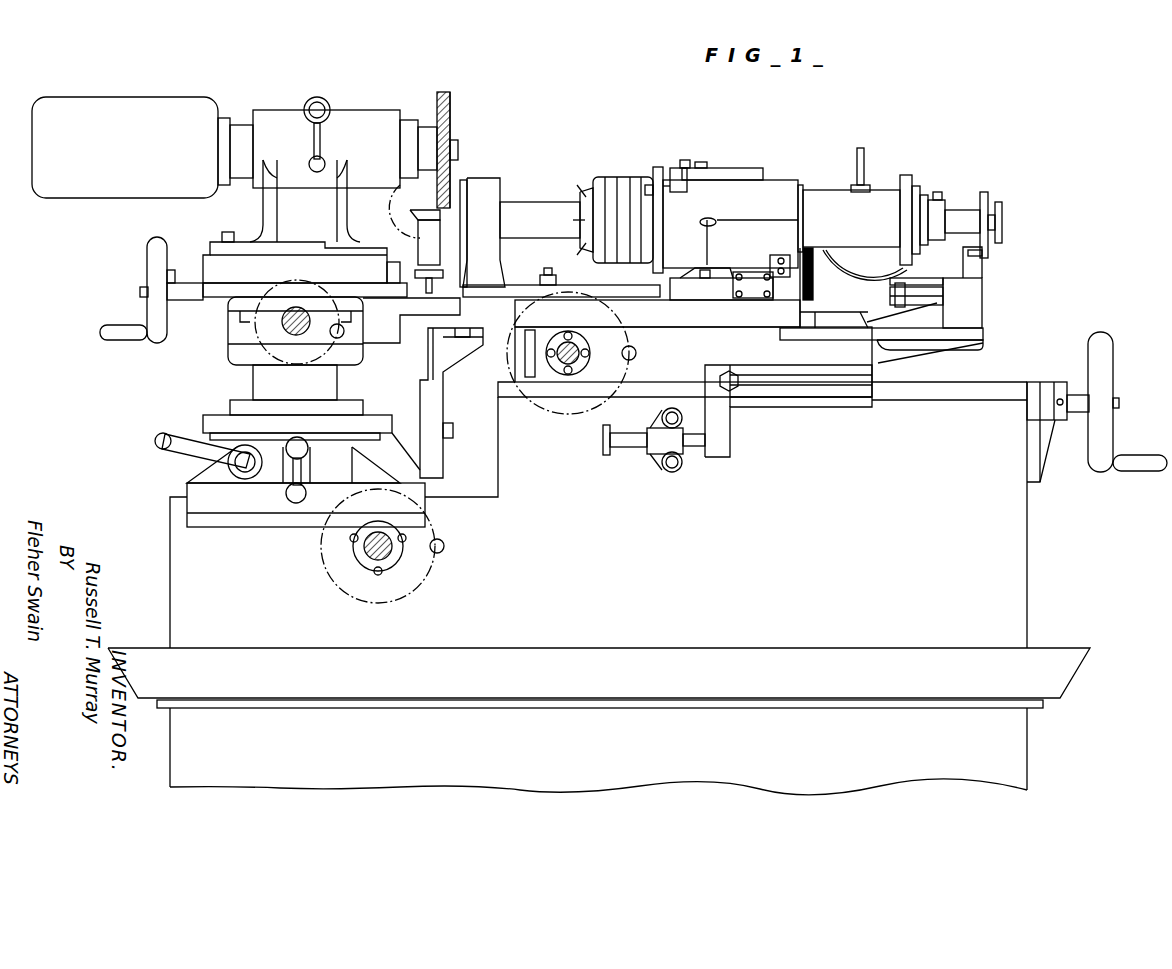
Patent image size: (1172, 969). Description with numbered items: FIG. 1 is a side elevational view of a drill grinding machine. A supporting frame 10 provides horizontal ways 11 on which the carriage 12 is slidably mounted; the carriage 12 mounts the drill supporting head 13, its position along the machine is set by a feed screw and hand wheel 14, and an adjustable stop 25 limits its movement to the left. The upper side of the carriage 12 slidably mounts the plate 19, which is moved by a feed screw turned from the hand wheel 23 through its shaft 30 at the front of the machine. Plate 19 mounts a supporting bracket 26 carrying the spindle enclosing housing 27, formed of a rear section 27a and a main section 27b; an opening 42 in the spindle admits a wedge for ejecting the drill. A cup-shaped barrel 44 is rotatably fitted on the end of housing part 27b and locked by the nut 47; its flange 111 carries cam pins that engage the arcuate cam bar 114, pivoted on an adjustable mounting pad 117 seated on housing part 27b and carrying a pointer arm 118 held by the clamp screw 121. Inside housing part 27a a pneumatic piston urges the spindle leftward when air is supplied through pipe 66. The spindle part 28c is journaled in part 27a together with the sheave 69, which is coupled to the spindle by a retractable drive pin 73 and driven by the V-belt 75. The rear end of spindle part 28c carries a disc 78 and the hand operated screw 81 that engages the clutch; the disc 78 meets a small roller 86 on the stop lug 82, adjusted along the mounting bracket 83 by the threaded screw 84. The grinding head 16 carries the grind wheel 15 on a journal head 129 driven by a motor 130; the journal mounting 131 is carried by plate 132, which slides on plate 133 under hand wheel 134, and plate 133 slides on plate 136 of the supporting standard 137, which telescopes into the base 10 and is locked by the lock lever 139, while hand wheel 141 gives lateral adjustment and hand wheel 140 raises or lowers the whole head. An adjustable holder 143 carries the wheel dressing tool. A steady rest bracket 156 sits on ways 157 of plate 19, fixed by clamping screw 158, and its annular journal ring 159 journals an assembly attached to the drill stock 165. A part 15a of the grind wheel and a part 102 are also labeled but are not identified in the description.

The supporting frame 10 is at (1030, 582).
The horizontal ways 11 is at (985, 395).
The carriage 12 is at (758, 358).
The drill supporting head 13 is at (800, 178).
The hand wheel 14 is at (1107, 333).
The grind wheel 15 is at (437, 96).
The grinding wheel face 15a is at (450, 96).
The grinding head 16 is at (266, 108).
The plate 19 is at (790, 310).
The hand wheel 23 is at (636, 358).
The adjustable stop 25 is at (700, 455).
The supporting bracket 26 is at (672, 290).
The spindle enclosing housing 27 is at (790, 180).
The rear section of housing 27a is at (872, 190).
The main section of housing 27b is at (772, 178).
The spindle part 28c is at (965, 210).
The shaft 30 is at (575, 360).
The opening 42 is at (716, 222).
The cup-shaped shell or barrel 44 is at (617, 177).
The locking nut 47 is at (585, 185).
The pipe 66 is at (856, 152).
The sheave 69 is at (920, 188).
The retractable drive pin 73 is at (938, 192).
The V-belt 75 is at (908, 175).
The disc 78 is at (990, 200).
The hand operated screw 81 is at (1003, 215).
The stop lug 82 is at (970, 282).
The mounting bracket 83 is at (970, 305).
The threaded screw 84 is at (920, 302).
The small roller 86 is at (982, 258).
The headstock base plate 102 is at (838, 318).
The flange 111 is at (657, 168).
The arcuate cam bar 114 is at (680, 160).
The adjustable mounting pad 117 is at (701, 162).
The pointer arm 118 is at (740, 168).
The clamp screw 121 is at (690, 180).
The journal head 129 is at (352, 112).
The motor 130 is at (110, 86).
The journal mounting 131 is at (270, 212).
The plate 132 is at (222, 238).
The plate 133 is at (210, 298).
The hand wheel 134 is at (147, 262).
The plate 136 is at (398, 360).
The supporting standard 137 is at (260, 373).
The lock lever 139 is at (163, 433).
The hand wheel 140 is at (437, 562).
The hand wheel 141 is at (324, 350).
The adjustable holder 143 is at (418, 240).
The bracket 156 is at (517, 285).
The ways 157 is at (618, 300).
The clamping screw 158 is at (551, 272).
The annular journal ring 159 is at (485, 180).
The drill stock 165 is at (530, 207).